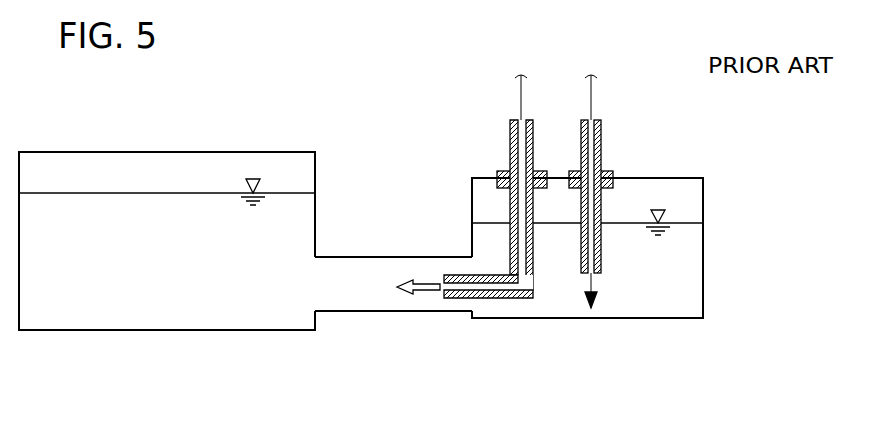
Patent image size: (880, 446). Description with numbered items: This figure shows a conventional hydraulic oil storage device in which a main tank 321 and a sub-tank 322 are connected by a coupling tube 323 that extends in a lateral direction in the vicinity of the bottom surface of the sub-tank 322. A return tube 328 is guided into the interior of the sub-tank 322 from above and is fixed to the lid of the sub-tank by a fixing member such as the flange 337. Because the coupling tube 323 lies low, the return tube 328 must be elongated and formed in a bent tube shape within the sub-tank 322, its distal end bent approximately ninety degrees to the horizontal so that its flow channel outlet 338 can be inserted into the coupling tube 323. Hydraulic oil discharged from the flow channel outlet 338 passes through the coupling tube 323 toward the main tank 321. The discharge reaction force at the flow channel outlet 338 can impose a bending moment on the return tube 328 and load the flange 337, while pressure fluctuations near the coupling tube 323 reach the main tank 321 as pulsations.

The main tank 321 is at (160, 330).
The sub-tank 322 is at (625, 318).
The coupling tube 323 is at (357, 295).
The return tube 328 is at (510, 145).
The flange 337 is at (505, 188).
The flow channel outlet 338 is at (445, 288).